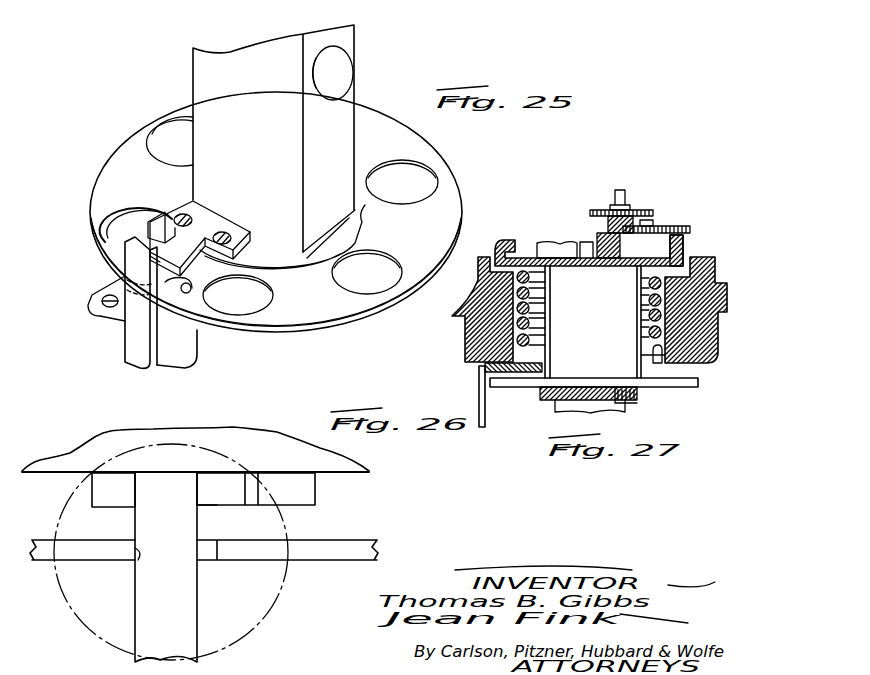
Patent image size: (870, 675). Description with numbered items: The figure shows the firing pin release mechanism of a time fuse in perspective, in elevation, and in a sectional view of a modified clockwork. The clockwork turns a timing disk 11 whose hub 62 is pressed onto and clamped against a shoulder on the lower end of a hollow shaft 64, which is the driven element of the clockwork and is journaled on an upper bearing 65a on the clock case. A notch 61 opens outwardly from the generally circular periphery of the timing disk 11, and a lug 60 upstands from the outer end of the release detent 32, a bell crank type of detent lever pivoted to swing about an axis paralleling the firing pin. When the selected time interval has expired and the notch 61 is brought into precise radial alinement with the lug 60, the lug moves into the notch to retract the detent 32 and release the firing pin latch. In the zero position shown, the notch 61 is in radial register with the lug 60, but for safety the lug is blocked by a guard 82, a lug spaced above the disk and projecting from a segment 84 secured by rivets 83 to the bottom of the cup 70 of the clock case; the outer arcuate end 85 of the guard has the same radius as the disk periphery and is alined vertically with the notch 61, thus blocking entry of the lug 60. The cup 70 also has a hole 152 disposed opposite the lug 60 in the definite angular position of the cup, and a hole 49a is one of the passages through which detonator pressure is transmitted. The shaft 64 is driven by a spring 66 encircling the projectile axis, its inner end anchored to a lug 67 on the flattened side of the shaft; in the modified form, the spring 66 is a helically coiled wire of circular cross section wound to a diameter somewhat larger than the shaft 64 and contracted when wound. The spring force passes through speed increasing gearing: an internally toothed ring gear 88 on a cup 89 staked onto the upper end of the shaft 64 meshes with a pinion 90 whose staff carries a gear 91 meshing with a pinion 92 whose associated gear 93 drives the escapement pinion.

In FIG. 25, the timing disk 11 is at (431, 267).
In FIG. 27, the timing disk 11 is at (664, 387).
In FIG. 26, the timing disk 11 is at (330, 560).
In FIG. 25, the detent lever 32 is at (90, 299).
In FIG. 25, the hole 49a is at (430, 178).
In FIG. 25, the lug 60 is at (138, 333).
In FIG. 27, the lug 60 is at (487, 404).
In FIG. 26, the lug 60 is at (147, 593).
In FIG. 25, the notch 61 is at (192, 291).
In FIG. 26, the notch 61 is at (135, 568).
In FIG. 25, the hub 62 is at (362, 221).
In FIG. 25, the hollow shaft 64 is at (193, 85).
In FIG. 27, the hollow shaft 64 is at (645, 330).
In FIG. 27, the upper bearing 65a is at (556, 243).
In FIG. 27, the spring 66 is at (661, 314).
In FIG. 25, the lug 67 is at (347, 70).
In FIG. 27, the cup-shaped bottom member 70 is at (473, 340).
In FIG. 26, the cup-shaped bottom member 70 is at (323, 452).
In FIG. 25, the guard 82 is at (160, 213).
In FIG. 26, the guard 82 is at (233, 472).
In FIG. 25, the rivets 83 is at (222, 232).
In FIG. 25, the segment 84 is at (230, 222).
In FIG. 26, the segment 84 is at (313, 488).
In FIG. 25, the outer arcuate end 85 is at (150, 262).
In FIG. 26, the outer arcuate end 85 is at (217, 500).
In FIG. 27, the ring gear 88 is at (514, 240).
In FIG. 27, the cup 89 is at (684, 251).
In FIG. 27, the pinion 90 is at (683, 226).
In FIG. 27, the gear 91 is at (656, 220).
In FIG. 27, the pinion 92 is at (605, 228).
In FIG. 27, the gear 93 is at (633, 210).
In FIG. 26, the hole 152 is at (55, 602).